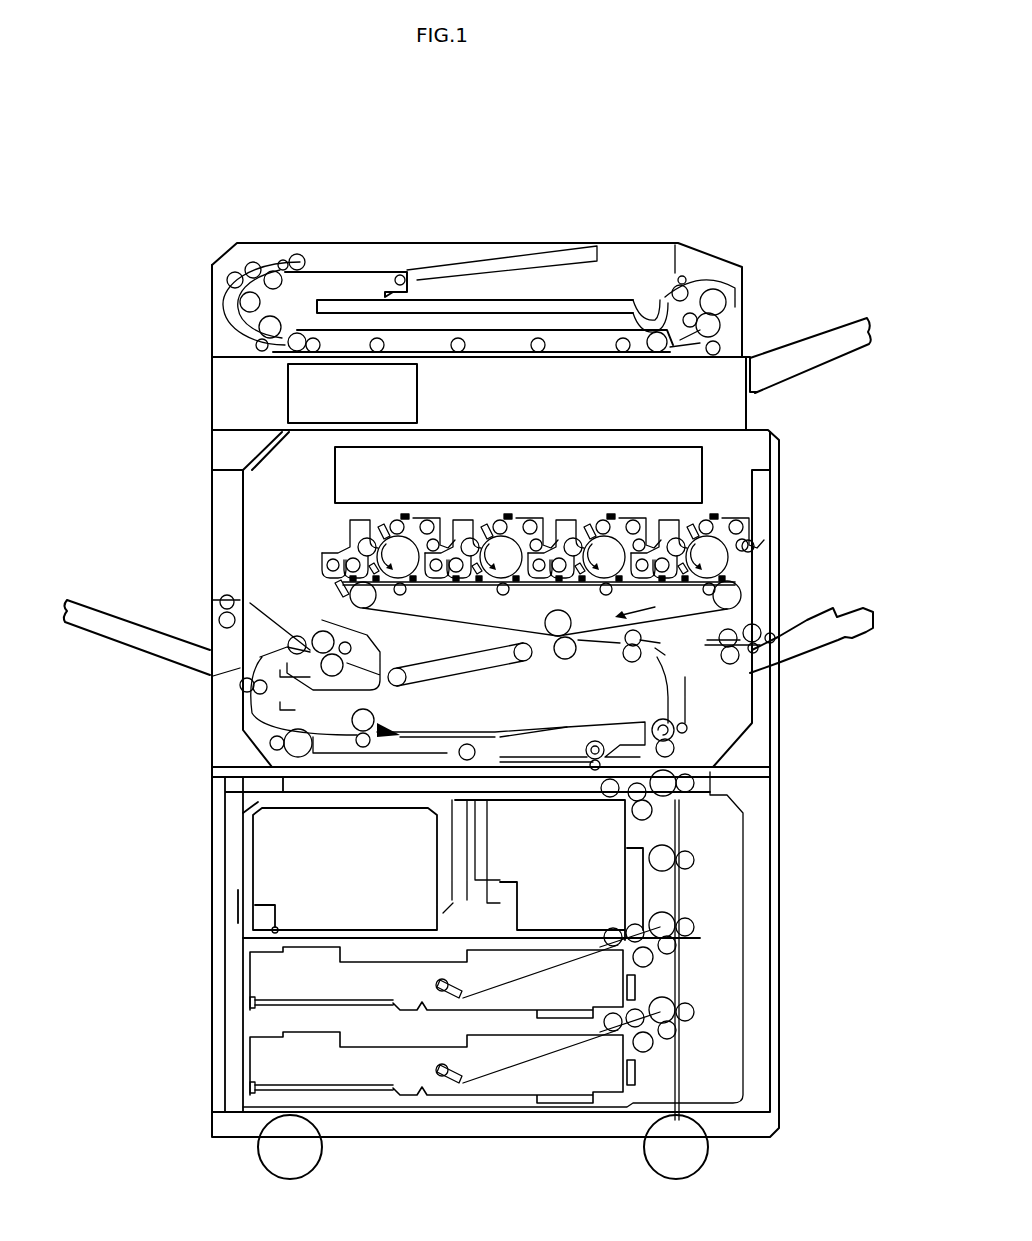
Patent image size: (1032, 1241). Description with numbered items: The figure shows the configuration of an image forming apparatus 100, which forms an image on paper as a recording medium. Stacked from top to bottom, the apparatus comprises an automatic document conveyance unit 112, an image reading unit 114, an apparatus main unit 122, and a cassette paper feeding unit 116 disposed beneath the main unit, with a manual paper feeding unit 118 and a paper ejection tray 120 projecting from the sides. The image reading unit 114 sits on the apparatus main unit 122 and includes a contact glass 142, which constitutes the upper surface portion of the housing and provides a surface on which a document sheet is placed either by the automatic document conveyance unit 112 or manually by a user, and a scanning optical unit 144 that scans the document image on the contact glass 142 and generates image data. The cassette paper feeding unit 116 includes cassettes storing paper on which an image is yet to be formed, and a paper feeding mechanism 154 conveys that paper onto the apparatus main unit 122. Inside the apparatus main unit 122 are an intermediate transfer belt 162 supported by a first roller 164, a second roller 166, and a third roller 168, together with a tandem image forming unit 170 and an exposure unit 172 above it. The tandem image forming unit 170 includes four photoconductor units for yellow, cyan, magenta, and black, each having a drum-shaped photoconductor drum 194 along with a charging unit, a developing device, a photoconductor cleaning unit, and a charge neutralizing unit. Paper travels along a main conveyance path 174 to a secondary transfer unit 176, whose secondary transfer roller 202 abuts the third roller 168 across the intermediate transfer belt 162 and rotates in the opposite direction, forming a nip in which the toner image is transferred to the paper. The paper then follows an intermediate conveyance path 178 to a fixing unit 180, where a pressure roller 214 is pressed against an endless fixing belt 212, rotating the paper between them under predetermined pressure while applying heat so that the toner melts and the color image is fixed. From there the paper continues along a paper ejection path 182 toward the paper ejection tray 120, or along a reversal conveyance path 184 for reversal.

The image forming apparatus 100 is at (717, 166).
The automatic document conveyance unit 112 is at (292, 243).
The image reading unit 114 is at (212, 397).
The cassette paper feeding unit 116 is at (212, 915).
The manual paper feeding unit 118 is at (860, 610).
The paper ejection tray 120 is at (78, 598).
The apparatus main unit 122 is at (212, 518).
The contact glass 142 is at (592, 348).
The scanning optical unit 144 is at (418, 400).
The paper feeding mechanism 154 is at (705, 972).
The intermediate transfer belt 162 is at (468, 612).
The first roller 164 is at (741, 596).
The second roller 166 is at (362, 608).
The third roller 168 is at (590, 619).
The tandem image forming unit 170 is at (500, 521).
The exposure unit 172 is at (335, 474).
The main conveyance path 174 is at (682, 664).
The secondary transfer unit 176 is at (555, 665).
The intermediate conveyance path 178 is at (447, 680).
The fixing unit 180 is at (293, 620).
The paper ejection path 182 is at (207, 680).
The reversal conveyance path 184 is at (233, 705).
The photoconductor drum 194 is at (745, 560).
The secondary transfer roller 202 is at (566, 659).
The fixing belt 212 is at (347, 627).
The pressure roller 214 is at (330, 680).